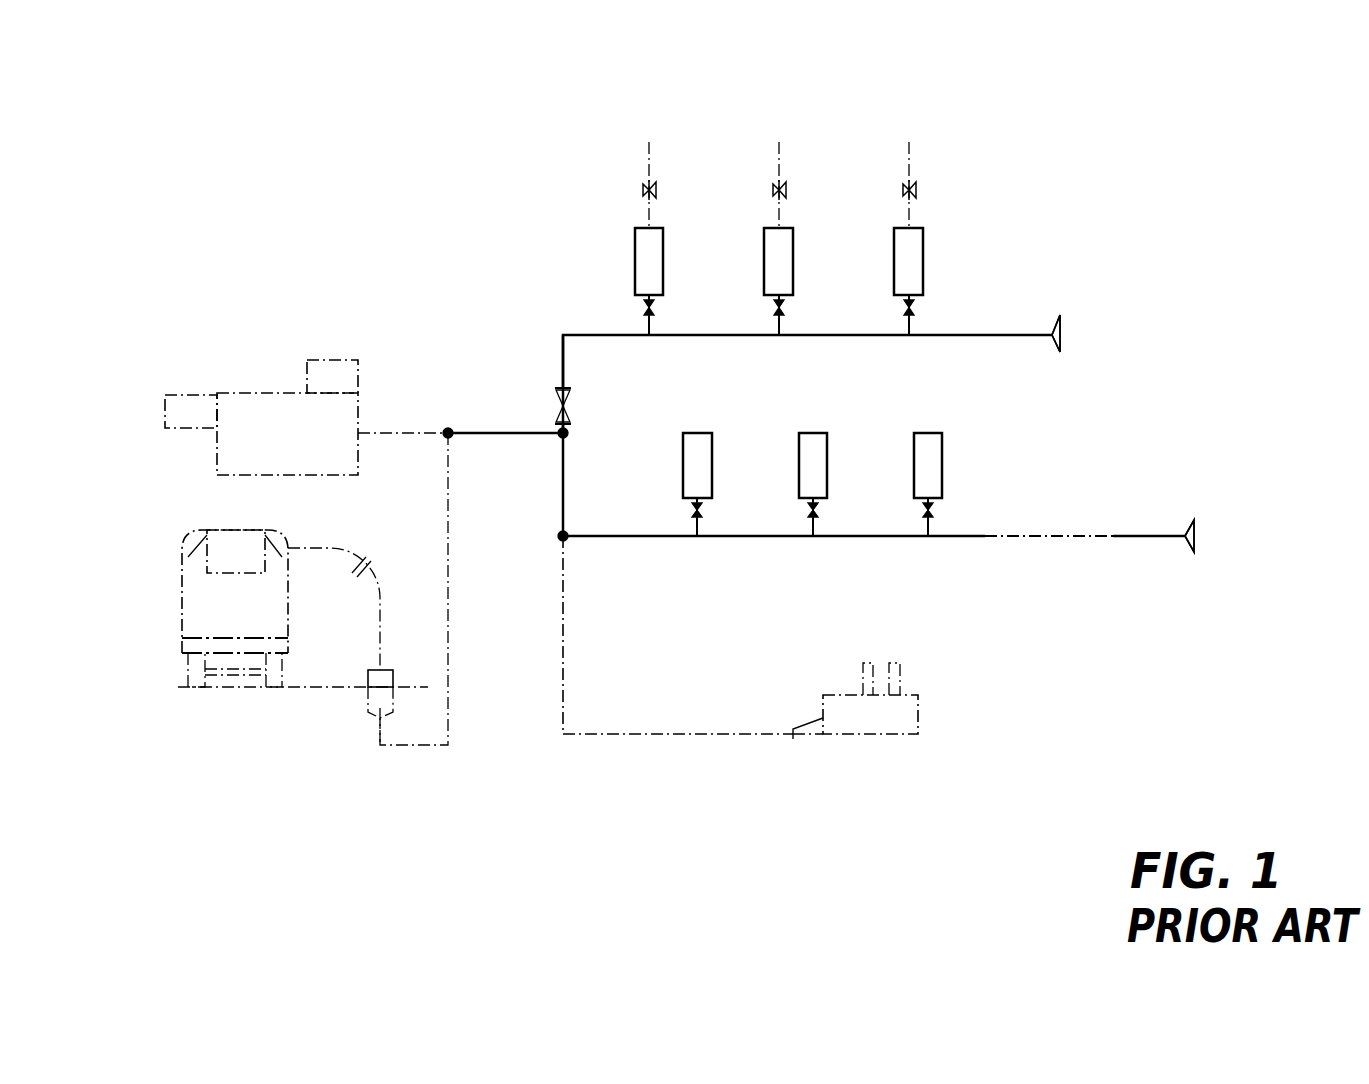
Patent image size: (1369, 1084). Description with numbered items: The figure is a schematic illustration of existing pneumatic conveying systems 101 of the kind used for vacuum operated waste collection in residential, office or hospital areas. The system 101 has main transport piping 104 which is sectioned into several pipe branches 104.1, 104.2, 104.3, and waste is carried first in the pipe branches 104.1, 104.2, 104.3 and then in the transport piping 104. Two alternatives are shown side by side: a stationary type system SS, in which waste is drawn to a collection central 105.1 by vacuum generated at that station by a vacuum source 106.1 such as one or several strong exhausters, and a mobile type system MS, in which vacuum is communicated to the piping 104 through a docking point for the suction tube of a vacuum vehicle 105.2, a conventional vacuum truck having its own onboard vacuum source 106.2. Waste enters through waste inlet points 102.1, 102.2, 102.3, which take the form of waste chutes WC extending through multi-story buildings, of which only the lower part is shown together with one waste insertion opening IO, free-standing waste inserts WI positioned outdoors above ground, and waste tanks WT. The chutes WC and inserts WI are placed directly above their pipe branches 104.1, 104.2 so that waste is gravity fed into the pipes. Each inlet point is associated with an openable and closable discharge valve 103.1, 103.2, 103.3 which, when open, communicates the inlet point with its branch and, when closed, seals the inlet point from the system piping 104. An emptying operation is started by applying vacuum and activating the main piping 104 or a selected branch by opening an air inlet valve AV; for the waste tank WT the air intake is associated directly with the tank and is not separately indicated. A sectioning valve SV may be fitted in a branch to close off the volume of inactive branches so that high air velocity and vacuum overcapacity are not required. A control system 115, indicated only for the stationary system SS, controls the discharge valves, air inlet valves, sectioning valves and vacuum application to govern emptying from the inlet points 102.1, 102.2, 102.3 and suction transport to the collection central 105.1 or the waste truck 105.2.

The pneumatic conveying system 101 is at (505, 778).
The main transport piping 104 is at (488, 420).
The pipe branch 104.1 is at (740, 335).
The pipe branch 104.2 is at (1047, 536).
The pipe branch 104.3 is at (645, 734).
The waste inlet point 102.1 is at (938, 228).
The waste inlet point 102.2 is at (987, 455).
The waste inlet point 102.3 is at (868, 740).
The discharge valve 103.1 is at (915, 310).
The discharge valve 103.2 is at (932, 508).
The discharge valve 103.3 is at (823, 725).
The collection central 105.1 is at (270, 378).
The waste truck 105.2 is at (288, 658).
The vacuum source 106.1 is at (343, 360).
The onboard vacuum source 106.2 is at (207, 553).
The control system 115 is at (180, 395).
The sectioning valve SV is at (572, 385).
The waste insertion opening IO is at (645, 190).
The waste chute WC is at (780, 215).
The air inlet valve AV is at (1060, 333).
The stationary type system SS is at (168, 468).
The mobile type system MS is at (170, 715).
The waste insert WI is at (798, 498).
The waste tank WT is at (918, 734).